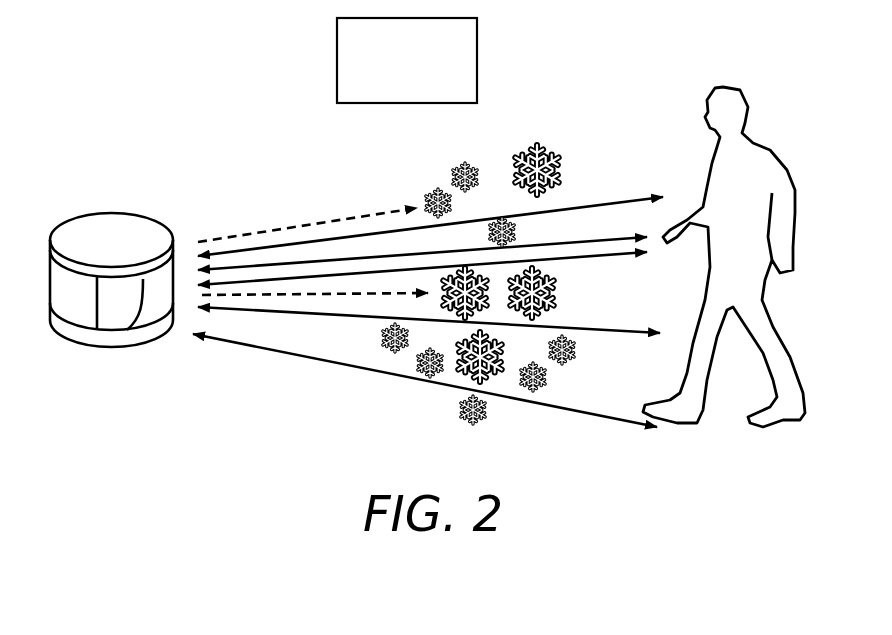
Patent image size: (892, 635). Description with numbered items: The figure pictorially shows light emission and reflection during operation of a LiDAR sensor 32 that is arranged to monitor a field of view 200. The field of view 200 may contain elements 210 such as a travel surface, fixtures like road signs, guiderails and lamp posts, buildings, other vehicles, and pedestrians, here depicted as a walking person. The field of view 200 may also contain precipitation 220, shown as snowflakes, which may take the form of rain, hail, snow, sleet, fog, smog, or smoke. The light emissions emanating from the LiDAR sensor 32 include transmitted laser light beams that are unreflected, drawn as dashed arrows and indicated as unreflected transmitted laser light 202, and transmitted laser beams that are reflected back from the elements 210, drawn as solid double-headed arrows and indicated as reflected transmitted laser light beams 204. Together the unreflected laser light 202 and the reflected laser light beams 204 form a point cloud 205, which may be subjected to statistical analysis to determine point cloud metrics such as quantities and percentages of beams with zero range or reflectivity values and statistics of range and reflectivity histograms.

The LiDAR sensor 32 is at (129, 246).
The field of view 200 is at (290, 117).
The unreflected transmitted laser light beams 202 is at (352, 80).
The reflected transmitted laser light beams 204 is at (405, 230).
The point cloud 205 is at (248, 363).
The elements in the field of view 210 is at (760, 215).
The precipitation 220 is at (563, 152).